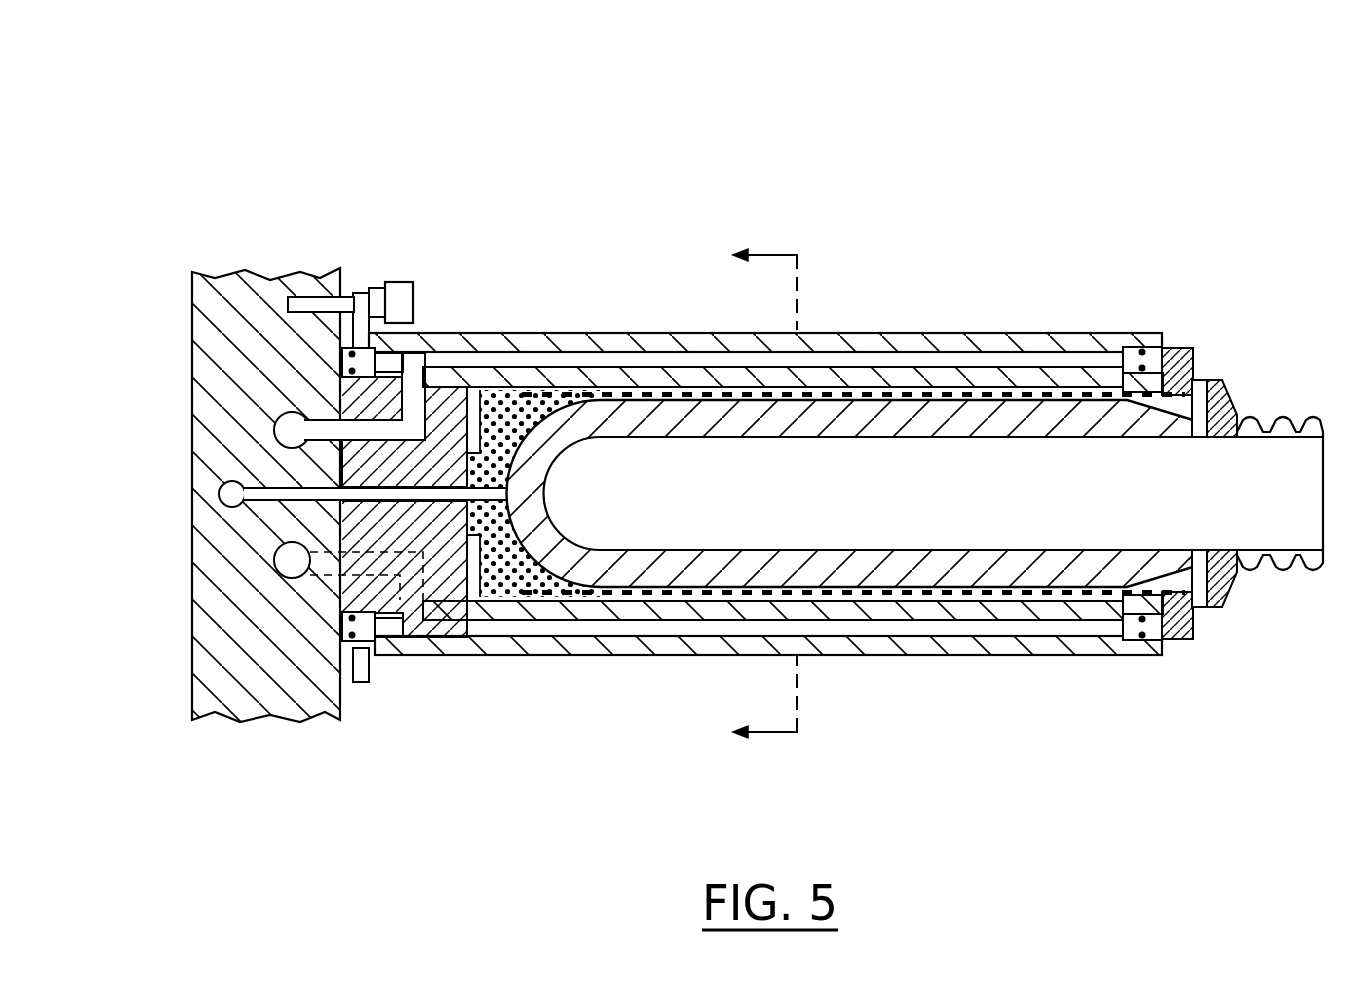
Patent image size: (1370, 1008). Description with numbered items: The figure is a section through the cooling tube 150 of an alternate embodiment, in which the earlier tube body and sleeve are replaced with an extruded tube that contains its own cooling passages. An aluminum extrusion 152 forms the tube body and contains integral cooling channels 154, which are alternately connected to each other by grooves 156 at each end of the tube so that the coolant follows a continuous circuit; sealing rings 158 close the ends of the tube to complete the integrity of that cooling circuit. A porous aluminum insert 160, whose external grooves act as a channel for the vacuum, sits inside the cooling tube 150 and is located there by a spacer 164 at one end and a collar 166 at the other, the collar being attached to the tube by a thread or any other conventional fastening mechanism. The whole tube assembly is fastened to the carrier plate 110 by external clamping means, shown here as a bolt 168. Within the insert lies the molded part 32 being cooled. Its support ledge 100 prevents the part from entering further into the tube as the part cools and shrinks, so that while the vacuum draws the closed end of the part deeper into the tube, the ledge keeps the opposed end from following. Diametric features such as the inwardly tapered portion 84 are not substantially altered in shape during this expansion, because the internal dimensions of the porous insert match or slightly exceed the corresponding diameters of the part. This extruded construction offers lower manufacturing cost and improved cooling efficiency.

The cooling tube 150 is at (790, 396).
The carrier plate 110 is at (258, 272).
The bolt 168 is at (357, 300).
The grooves 156 is at (423, 337).
The porous aluminum insert 160 is at (510, 403).
The aluminum extrusion 152 is at (835, 333).
The integral cooling channels 154 is at (930, 340).
The sealing rings 158 is at (1175, 348).
The collar 166 is at (1199, 380).
The inwardly tapered portion 84 is at (1200, 567).
The support ledge 100 is at (1224, 587).
The molded part 32 is at (1022, 570).
The spacer 164 is at (443, 583).